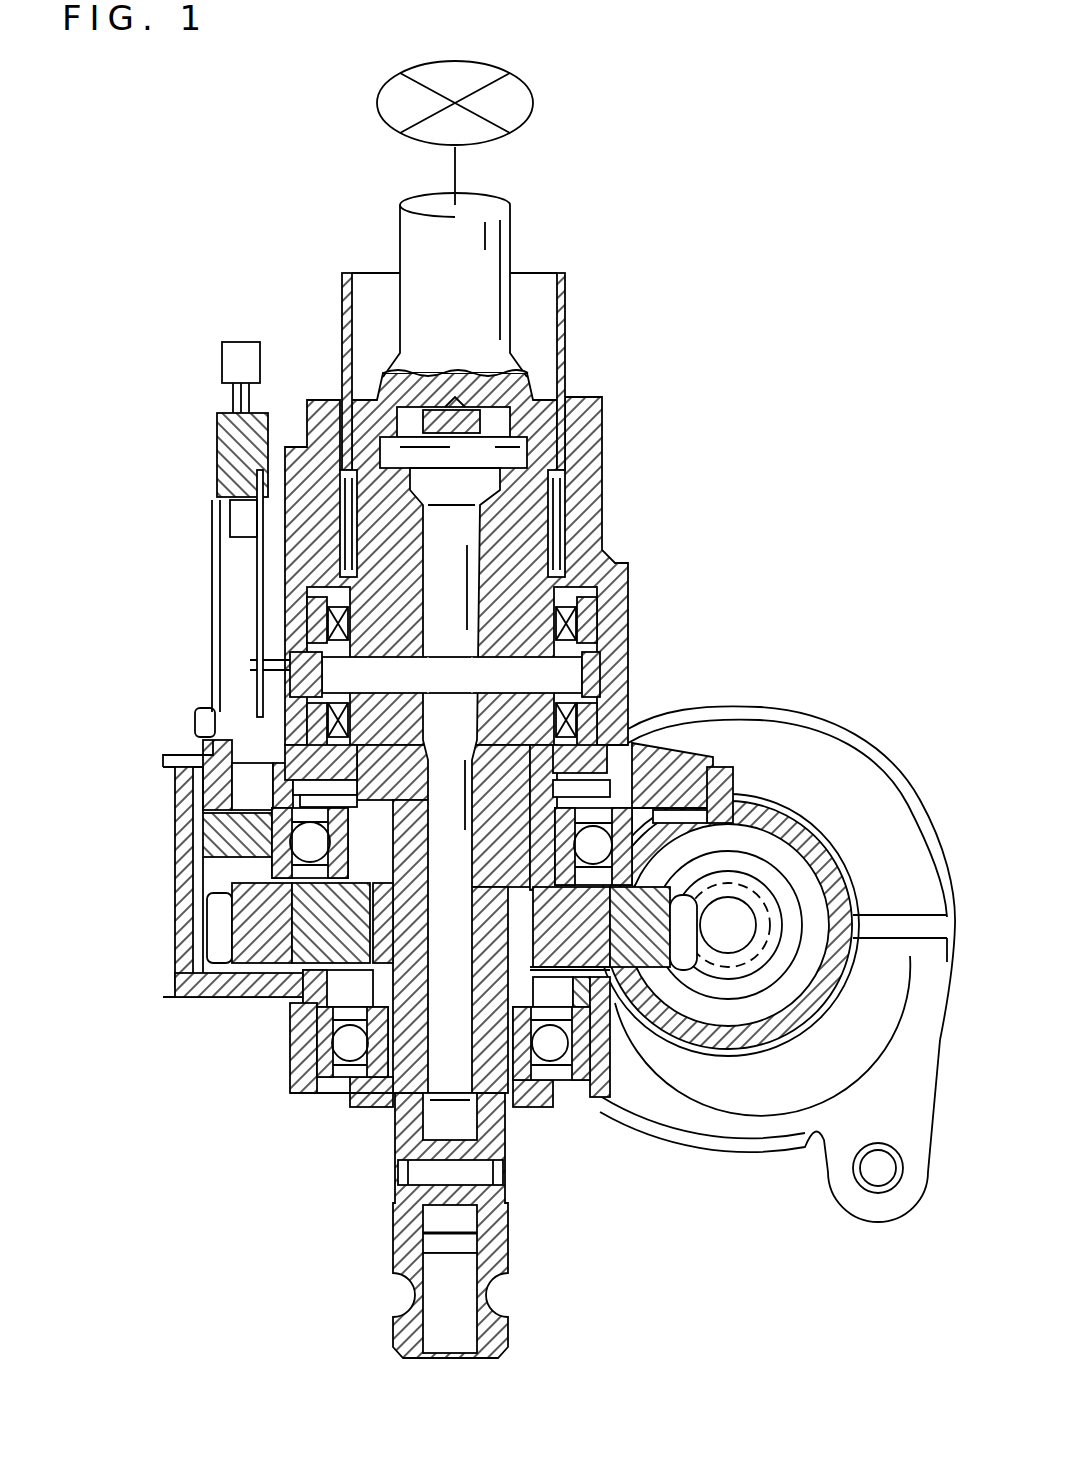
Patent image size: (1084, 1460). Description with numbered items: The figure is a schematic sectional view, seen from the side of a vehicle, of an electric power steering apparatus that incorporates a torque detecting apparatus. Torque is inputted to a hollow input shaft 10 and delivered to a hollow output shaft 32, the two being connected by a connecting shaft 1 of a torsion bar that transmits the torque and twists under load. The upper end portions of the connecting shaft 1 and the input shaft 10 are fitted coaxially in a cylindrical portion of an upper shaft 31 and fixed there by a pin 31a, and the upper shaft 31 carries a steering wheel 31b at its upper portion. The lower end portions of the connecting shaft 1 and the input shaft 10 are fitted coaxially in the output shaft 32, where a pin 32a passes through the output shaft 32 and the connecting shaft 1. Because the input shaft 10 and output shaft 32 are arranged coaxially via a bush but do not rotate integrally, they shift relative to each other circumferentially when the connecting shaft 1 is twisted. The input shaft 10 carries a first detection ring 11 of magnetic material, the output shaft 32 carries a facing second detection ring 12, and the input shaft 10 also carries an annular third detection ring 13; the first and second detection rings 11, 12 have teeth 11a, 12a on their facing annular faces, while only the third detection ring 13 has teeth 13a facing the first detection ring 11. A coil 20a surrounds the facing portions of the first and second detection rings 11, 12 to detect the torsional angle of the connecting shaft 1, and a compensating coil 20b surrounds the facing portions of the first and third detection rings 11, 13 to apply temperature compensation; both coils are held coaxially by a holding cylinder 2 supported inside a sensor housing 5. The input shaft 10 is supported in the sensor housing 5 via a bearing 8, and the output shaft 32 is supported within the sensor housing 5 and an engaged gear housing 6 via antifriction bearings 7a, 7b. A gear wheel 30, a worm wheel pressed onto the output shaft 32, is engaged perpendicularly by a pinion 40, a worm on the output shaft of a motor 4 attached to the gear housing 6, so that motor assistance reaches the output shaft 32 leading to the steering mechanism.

The connecting shaft 1 is at (455, 1077).
The holding cylinder 2 is at (317, 580).
The motor 4 is at (642, 1137).
The sensor housing 5 is at (740, 722).
The gear housing 6 is at (187, 988).
The antifriction bearing 7a is at (308, 847).
The antifriction bearing 7b is at (343, 1043).
The bearing 8 is at (603, 490).
The input shaft 10 is at (583, 400).
The first detection ring 11 is at (620, 647).
The teeth 11a is at (640, 680).
The second detection ring 12 is at (637, 718).
The teeth 12a is at (650, 702).
The third detection ring 13 is at (607, 550).
The teeth 13a is at (612, 577).
The coil 20a is at (332, 720).
The compensating coil 20b is at (330, 628).
The gear wheel 30 is at (665, 963).
The upper shaft 31 is at (512, 230).
The pin 31a is at (560, 395).
The steering wheel 31b is at (533, 103).
The output shaft 32 is at (398, 1138).
The pin 32a is at (400, 1175).
The pinion 40 is at (752, 980).